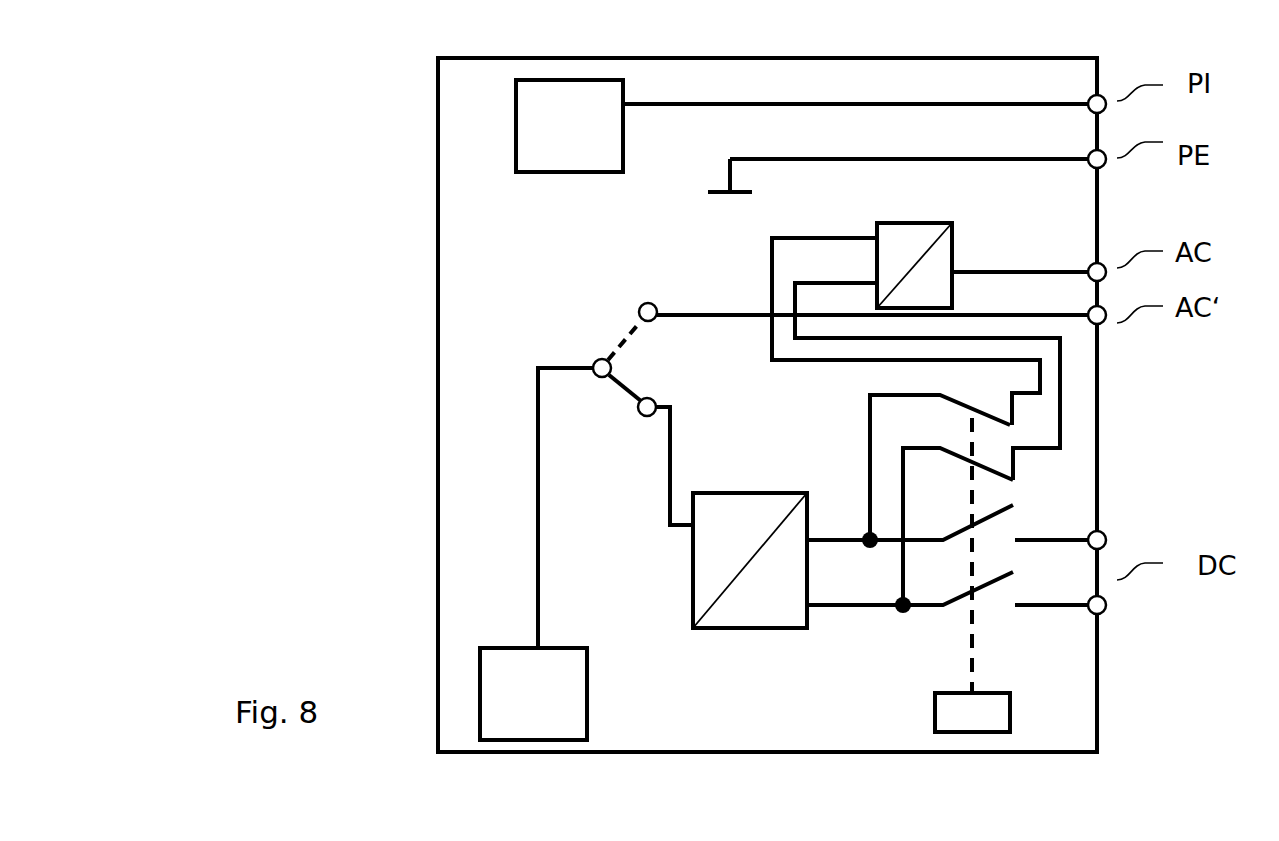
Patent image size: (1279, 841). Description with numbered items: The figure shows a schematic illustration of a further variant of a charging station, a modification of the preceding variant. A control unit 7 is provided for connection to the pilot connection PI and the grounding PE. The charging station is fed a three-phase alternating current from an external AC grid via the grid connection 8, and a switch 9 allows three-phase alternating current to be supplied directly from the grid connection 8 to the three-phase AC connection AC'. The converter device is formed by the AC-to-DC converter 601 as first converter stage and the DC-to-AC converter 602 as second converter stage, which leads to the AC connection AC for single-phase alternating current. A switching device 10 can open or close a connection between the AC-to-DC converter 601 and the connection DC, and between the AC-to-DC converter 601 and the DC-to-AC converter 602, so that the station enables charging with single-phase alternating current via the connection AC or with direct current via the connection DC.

The control unit 7 is at (569, 126).
The grid connection 8 is at (533, 694).
The switch 9 is at (613, 335).
The switching device 10 is at (1012, 703).
The AC-to-DC converter 601 is at (744, 632).
The DC-to-AC converter 602 is at (920, 225).